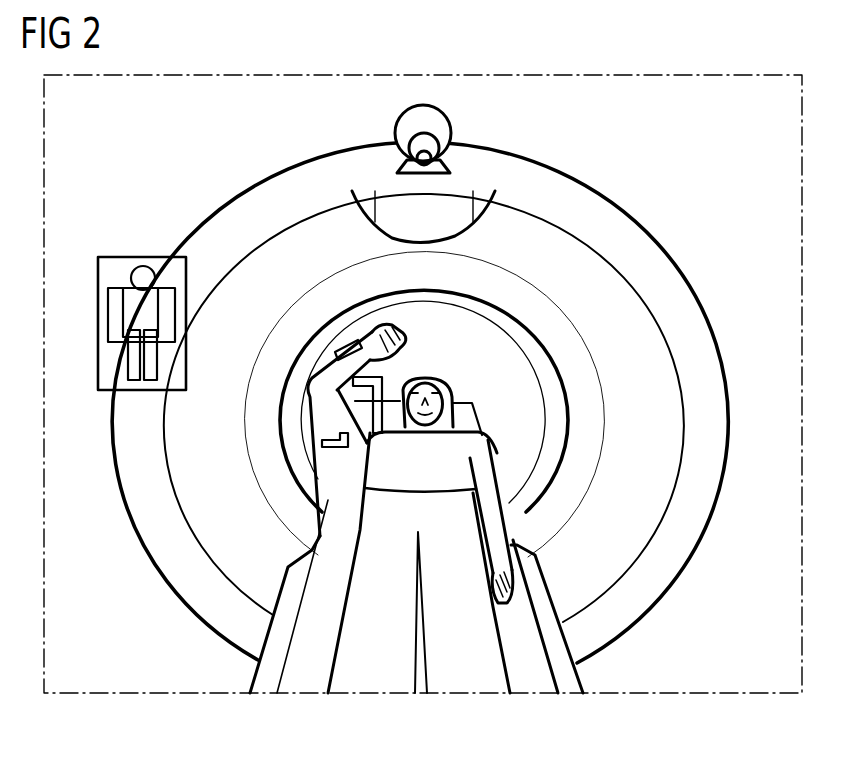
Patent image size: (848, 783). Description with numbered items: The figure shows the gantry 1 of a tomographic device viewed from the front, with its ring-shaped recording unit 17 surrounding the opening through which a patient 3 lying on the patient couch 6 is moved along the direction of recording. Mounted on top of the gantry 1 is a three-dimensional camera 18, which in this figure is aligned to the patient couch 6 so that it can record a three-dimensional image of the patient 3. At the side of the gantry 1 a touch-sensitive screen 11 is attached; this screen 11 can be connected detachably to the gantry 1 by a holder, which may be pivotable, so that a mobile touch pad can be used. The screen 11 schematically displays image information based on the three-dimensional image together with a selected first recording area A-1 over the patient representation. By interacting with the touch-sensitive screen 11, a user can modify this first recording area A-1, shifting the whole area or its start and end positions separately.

The gantry 1 is at (165, 598).
The patient 3 is at (358, 670).
The patient couch 6 is at (567, 677).
The touch-sensitive screen 11 is at (127, 263).
The recording unit 17 is at (212, 522).
The 3D camera 18 is at (438, 129).
The first recording area A-1 is at (108, 305).